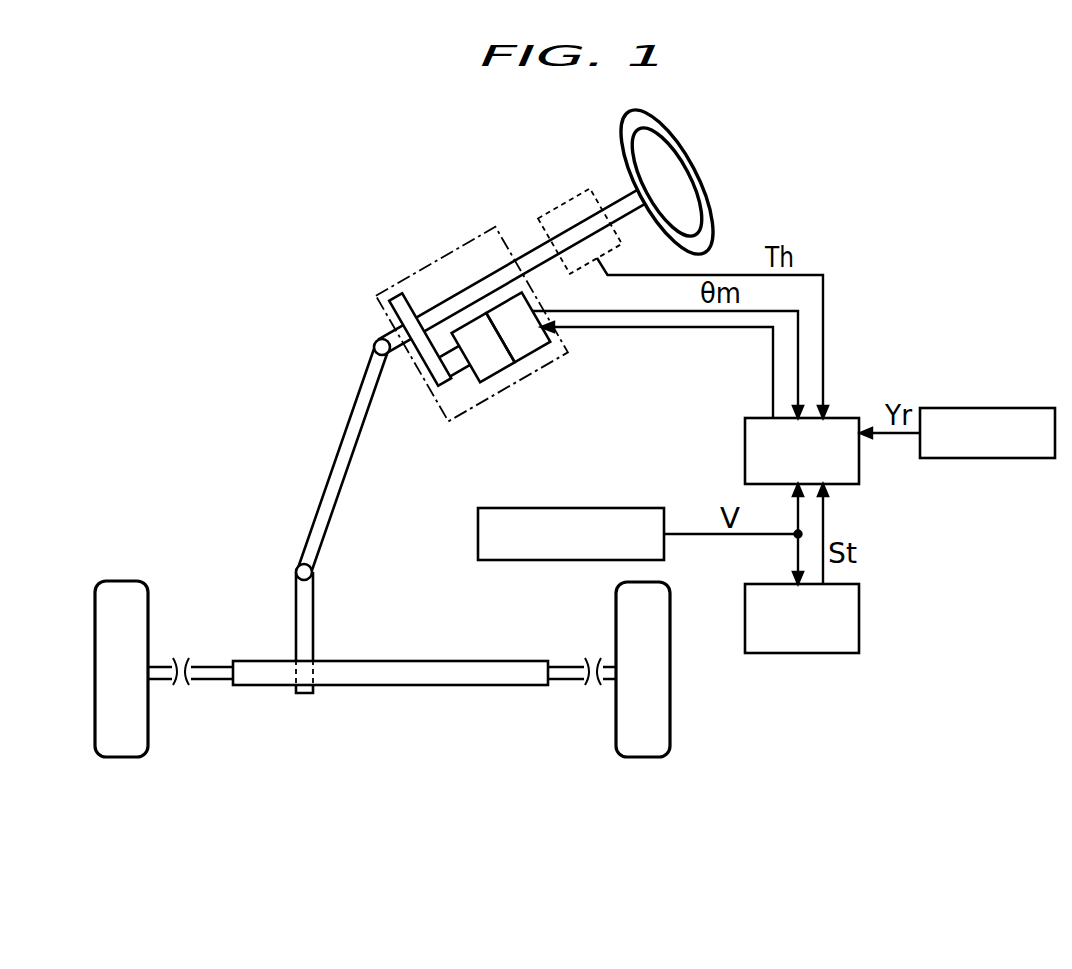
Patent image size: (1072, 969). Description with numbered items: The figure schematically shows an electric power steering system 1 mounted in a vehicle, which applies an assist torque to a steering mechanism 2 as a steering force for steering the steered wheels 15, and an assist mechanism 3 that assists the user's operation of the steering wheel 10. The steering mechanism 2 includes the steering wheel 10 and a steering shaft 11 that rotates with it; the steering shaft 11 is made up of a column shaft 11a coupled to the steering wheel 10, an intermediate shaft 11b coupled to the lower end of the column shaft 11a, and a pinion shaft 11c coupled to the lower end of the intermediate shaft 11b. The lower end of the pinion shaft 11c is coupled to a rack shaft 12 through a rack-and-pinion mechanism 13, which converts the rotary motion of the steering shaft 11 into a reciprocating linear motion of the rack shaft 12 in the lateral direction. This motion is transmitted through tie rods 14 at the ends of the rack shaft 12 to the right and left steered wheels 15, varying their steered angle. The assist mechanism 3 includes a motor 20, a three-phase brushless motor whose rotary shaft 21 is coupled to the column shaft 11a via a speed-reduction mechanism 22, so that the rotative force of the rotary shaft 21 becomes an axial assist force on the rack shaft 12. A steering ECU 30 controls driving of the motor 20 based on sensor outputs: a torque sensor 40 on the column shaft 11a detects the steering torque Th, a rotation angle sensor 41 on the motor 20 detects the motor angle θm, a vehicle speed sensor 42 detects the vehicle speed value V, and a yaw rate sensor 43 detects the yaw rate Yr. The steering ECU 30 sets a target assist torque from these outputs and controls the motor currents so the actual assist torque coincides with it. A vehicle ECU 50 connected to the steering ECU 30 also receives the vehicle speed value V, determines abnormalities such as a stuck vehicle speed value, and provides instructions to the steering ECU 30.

The electric power steering system 1 is at (208, 141).
The steering mechanism 2 is at (215, 333).
The assist mechanism 3 is at (462, 242).
The steering wheel 10 is at (692, 166).
The steering shaft 11 is at (313, 500).
The column shaft 11a is at (376, 341).
The intermediate shaft 11b is at (331, 453).
The pinion shaft 11c is at (282, 613).
The rack shaft 12 is at (418, 687).
The rack-and-pinion mechanism 13 is at (280, 641).
The tie rods 14 is at (210, 681).
The steered wheels 15 is at (118, 758).
The motor 20 is at (507, 372).
The rotary shaft 21 is at (460, 372).
The speed-reduction mechanism 22 is at (435, 393).
The steering electronic control unit 30 is at (860, 452).
The torque sensor 40 is at (563, 201).
The rotation angle sensor 41 is at (537, 352).
The vehicle speed sensor 42 is at (548, 508).
The yaw rate sensor 43 is at (988, 408).
The vehicle electronic control unit 50 is at (860, 620).